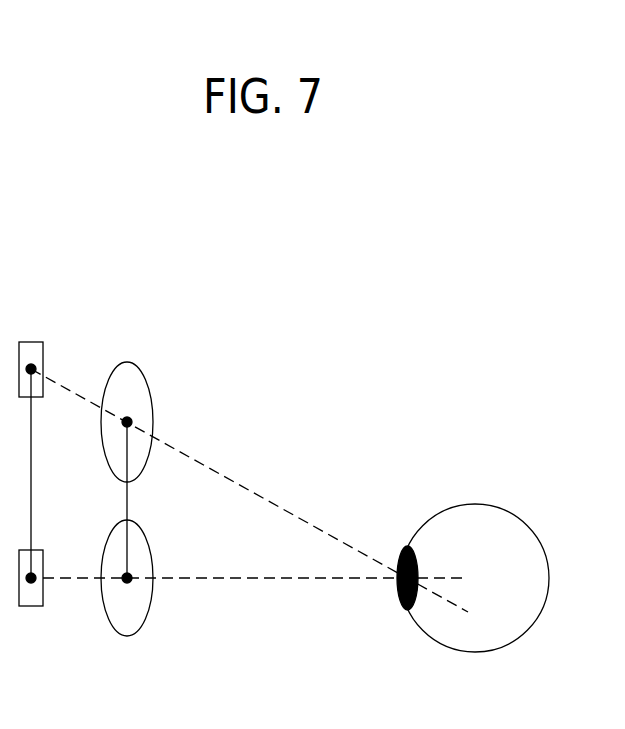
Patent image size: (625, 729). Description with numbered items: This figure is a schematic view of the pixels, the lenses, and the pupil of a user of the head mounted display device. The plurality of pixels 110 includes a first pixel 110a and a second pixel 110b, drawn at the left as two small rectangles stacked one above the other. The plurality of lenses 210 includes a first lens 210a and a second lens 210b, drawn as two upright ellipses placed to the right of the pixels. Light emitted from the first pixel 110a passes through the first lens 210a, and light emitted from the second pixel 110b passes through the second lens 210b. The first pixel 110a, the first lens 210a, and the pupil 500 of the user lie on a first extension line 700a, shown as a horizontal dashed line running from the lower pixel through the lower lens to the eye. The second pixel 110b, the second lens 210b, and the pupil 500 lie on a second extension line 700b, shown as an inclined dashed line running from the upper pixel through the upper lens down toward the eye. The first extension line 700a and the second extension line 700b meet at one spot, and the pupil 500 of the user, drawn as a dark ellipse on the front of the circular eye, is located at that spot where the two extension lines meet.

The plurality of pixels 110 is at (258, 472).
The first pixel 110a is at (31, 606).
The second pixel 110b is at (43, 345).
The plurality of lenses 210 is at (301, 526).
The first lens 210a is at (127, 636).
The second lens 210b is at (150, 380).
The pupil 500 is at (398, 562).
The first extension line 700a is at (259, 581).
The second extension line 700b is at (242, 484).